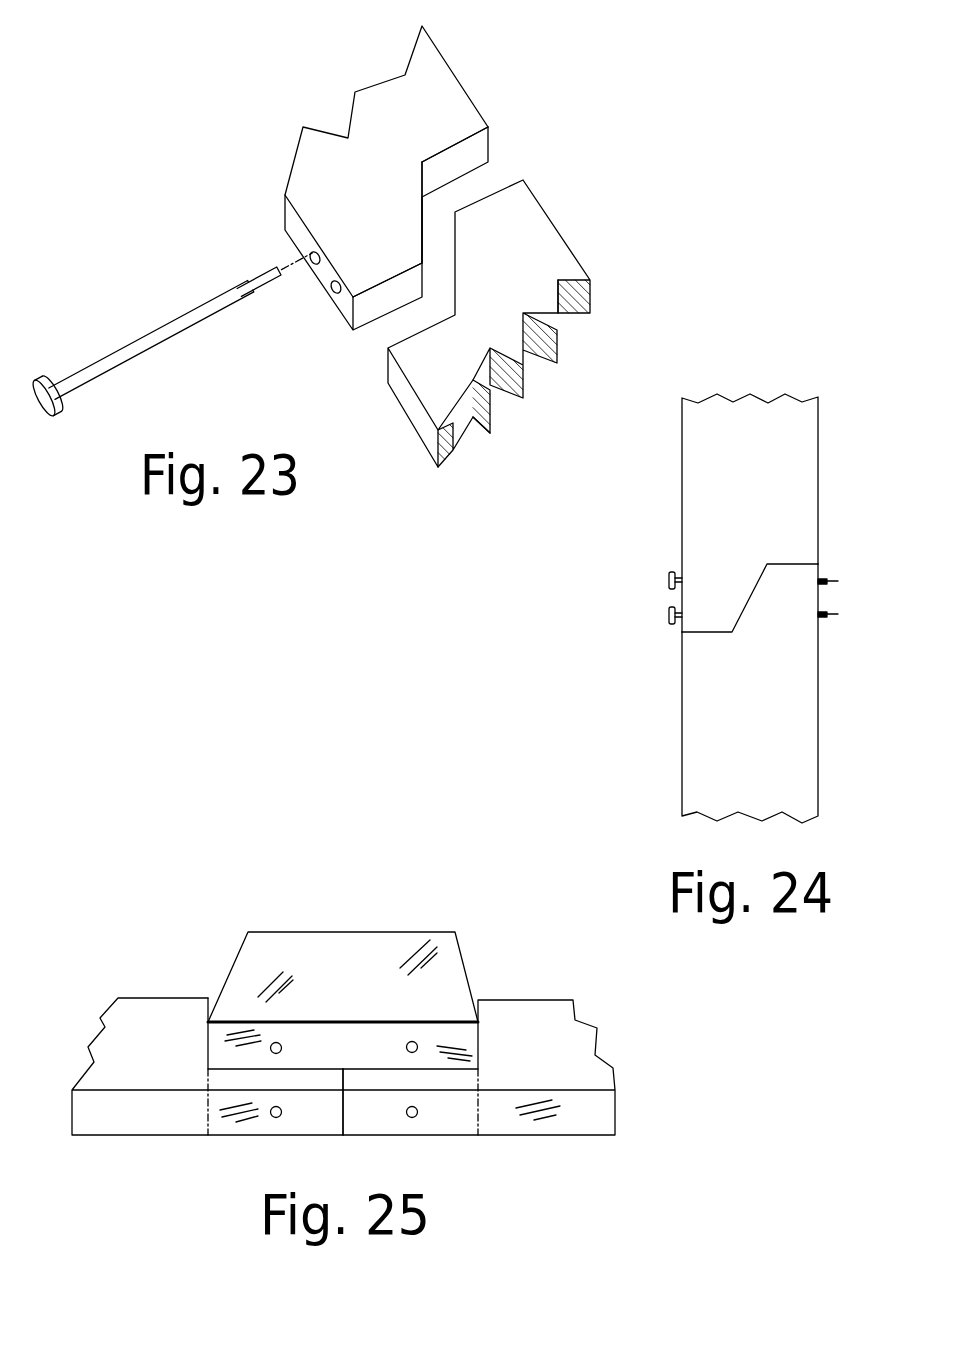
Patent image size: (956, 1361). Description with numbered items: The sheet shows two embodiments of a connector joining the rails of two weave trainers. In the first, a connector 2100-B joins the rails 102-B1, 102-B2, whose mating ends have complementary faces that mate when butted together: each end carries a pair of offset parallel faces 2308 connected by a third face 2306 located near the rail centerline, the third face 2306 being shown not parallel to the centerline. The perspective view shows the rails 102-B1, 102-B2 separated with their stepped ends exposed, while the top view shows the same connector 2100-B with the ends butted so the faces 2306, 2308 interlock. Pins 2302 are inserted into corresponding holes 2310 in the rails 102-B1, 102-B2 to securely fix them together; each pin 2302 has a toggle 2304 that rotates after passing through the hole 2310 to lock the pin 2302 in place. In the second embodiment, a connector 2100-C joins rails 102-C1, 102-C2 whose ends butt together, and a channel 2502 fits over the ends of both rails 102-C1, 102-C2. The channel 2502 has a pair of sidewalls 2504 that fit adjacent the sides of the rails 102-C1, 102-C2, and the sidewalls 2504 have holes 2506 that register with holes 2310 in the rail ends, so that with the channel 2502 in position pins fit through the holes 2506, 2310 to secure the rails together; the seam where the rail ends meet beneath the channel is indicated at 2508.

In FIG. 23, the connector 2100-B is at (634, 106).
In FIG. 24, the connector 2100-B is at (605, 603).
In FIG. 23, the rail 102-B1 is at (455, 68).
In FIG. 24, the rail 102-B1 is at (800, 504).
In FIG. 23, the rail 102-B2 is at (530, 183).
In FIG. 24, the rail 102-B2 is at (795, 731).
In FIG. 23, the pin 2302 is at (162, 327).
In FIG. 24, the pin 2302 is at (668, 614).
In FIG. 23, the toggle 2304 is at (267, 277).
In FIG. 24, the toggle 2304 is at (837, 580).
In FIG. 23, the third face 2306 is at (421, 203).
In FIG. 23, the offset parallel faces 2308 is at (462, 137).
In FIG. 23, the hole 2310 is at (338, 307).
In FIG. 25, the hole 2310 is at (276, 1118).
In FIG. 25, the connector 2100-C is at (326, 826).
In FIG. 25, the rail 102-C1 is at (185, 998).
In FIG. 25, the rail 102-C2 is at (512, 1000).
In FIG. 25, the channel 2502 is at (343, 931).
In FIG. 25, the sidewall 2504 is at (207, 1040).
In FIG. 25, the hole 2506 is at (406, 1045).
In FIG. 25, the joint seam 2508 is at (344, 1112).